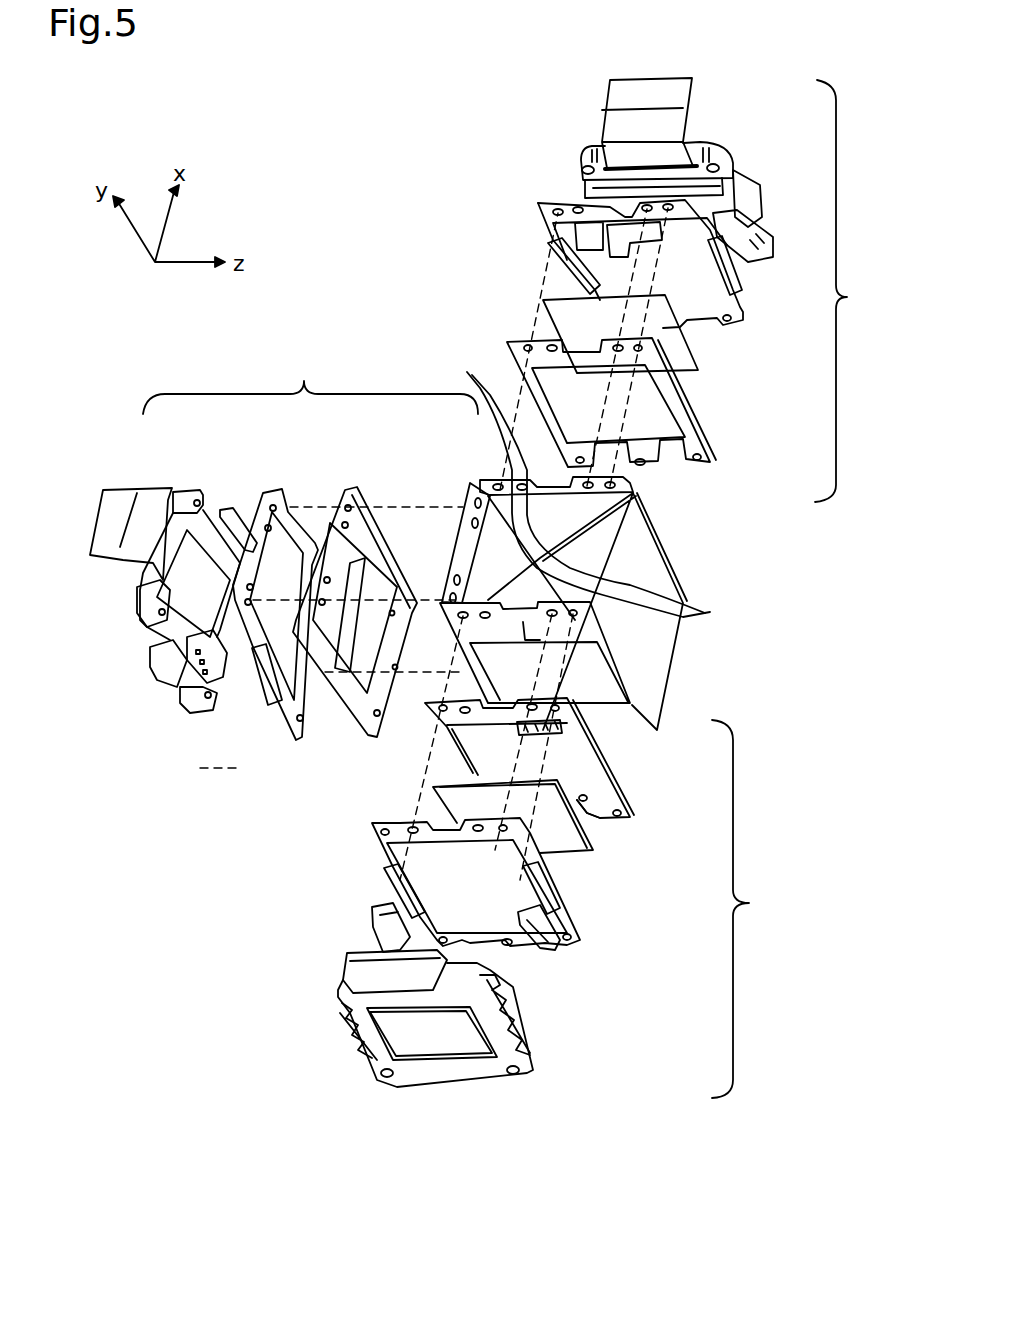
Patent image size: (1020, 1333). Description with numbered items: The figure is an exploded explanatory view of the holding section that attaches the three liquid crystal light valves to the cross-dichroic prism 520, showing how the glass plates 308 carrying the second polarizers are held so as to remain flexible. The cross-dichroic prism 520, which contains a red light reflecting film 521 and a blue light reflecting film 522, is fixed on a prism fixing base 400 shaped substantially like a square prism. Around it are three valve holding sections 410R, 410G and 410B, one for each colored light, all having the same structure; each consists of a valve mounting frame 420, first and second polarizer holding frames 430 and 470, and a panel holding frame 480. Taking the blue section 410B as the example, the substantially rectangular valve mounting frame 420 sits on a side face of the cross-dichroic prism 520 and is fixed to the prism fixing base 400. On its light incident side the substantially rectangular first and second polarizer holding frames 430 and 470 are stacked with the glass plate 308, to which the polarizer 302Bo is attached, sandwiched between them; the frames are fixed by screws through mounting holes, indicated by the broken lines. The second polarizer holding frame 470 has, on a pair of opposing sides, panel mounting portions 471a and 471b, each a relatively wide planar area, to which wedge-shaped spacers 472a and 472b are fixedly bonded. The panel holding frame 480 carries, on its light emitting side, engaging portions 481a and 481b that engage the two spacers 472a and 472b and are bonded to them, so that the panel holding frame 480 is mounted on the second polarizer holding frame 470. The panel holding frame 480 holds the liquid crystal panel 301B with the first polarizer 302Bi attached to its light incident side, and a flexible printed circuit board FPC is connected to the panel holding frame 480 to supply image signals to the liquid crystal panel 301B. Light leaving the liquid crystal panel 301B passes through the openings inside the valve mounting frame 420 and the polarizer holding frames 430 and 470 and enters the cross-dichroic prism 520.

The panel holding frame 480 is at (720, 140).
The second polarizer holding frame 470 is at (728, 300).
The first polarizer holding frame 430 is at (697, 415).
The valve mounting frame 420 is at (660, 473).
The glass plate 308 is at (540, 315).
The first valve holding section 410R is at (869, 291).
The second valve holding section 410G is at (310, 380).
The third valve holding section 410B is at (768, 909).
The prism fixing base 400 is at (595, 539).
The cross-dichroic prism 520 is at (648, 565).
The red light reflecting film 521 is at (564, 483).
The blue light reflecting film 522 is at (700, 614).
The second polarizer 302Bo is at (450, 792).
The liquid crystal panel 301B is at (409, 1095).
The first polarizer 302Bi is at (442, 1042).
The panel mounting portion 471a is at (550, 892).
The panel mounting portion 471b is at (400, 887).
The wedge-shaped spacer 472a is at (560, 960).
The wedge-shaped spacer 472b is at (373, 932).
The engaging portion 481a is at (526, 1019).
The engaging portion 481b is at (335, 1019).
The flexible printed circuit board FPC is at (362, 980).